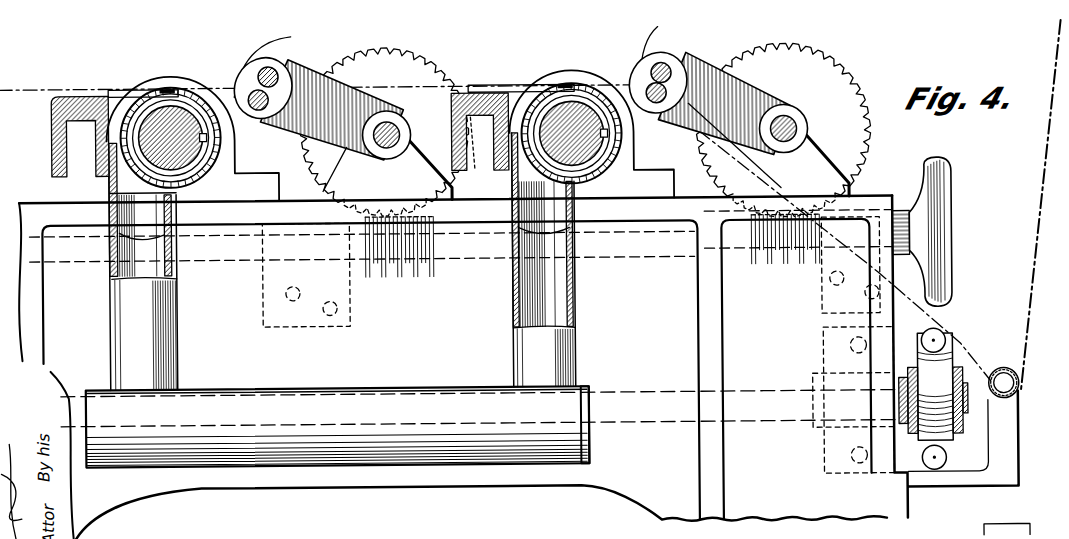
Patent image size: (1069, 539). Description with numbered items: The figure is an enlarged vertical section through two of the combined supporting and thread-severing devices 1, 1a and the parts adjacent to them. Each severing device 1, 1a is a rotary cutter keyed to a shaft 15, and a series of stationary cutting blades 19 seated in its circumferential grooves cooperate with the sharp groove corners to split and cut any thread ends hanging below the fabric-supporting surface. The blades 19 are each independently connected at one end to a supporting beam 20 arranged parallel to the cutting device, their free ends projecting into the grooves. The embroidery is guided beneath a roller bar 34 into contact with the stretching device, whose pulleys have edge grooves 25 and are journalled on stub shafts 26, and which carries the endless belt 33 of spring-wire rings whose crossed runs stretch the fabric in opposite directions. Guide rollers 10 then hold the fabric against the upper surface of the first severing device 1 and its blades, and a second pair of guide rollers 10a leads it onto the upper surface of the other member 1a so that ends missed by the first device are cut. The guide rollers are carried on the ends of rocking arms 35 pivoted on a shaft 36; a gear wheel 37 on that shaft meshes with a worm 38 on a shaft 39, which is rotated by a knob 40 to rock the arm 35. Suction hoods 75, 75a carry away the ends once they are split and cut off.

The supporting and thread-severing device 1 is at (590, 96).
The supporting and thread-severing device 1a is at (194, 96).
The guide rollers 10 is at (663, 64).
The guide rollers 10a is at (273, 72).
The shaft 15 is at (368, 261).
The stationary cutting blades 19 is at (132, 88).
The supporting beam 20 is at (54, 150).
The edge grooves 25 is at (977, 409).
The stub shafts 26 is at (966, 407).
The endless belt 33 is at (937, 474).
The roller bar 34 is at (1018, 389).
The rocking arms 35 is at (537, 106).
The shaft 36 is at (430, 116).
The gear wheel 37 is at (413, 70).
The worm 38 is at (414, 277).
The shaft 39 is at (656, 250).
The knob 40 is at (935, 218).
The suction hood 75 is at (165, 358).
The suction hood 75a is at (530, 331).